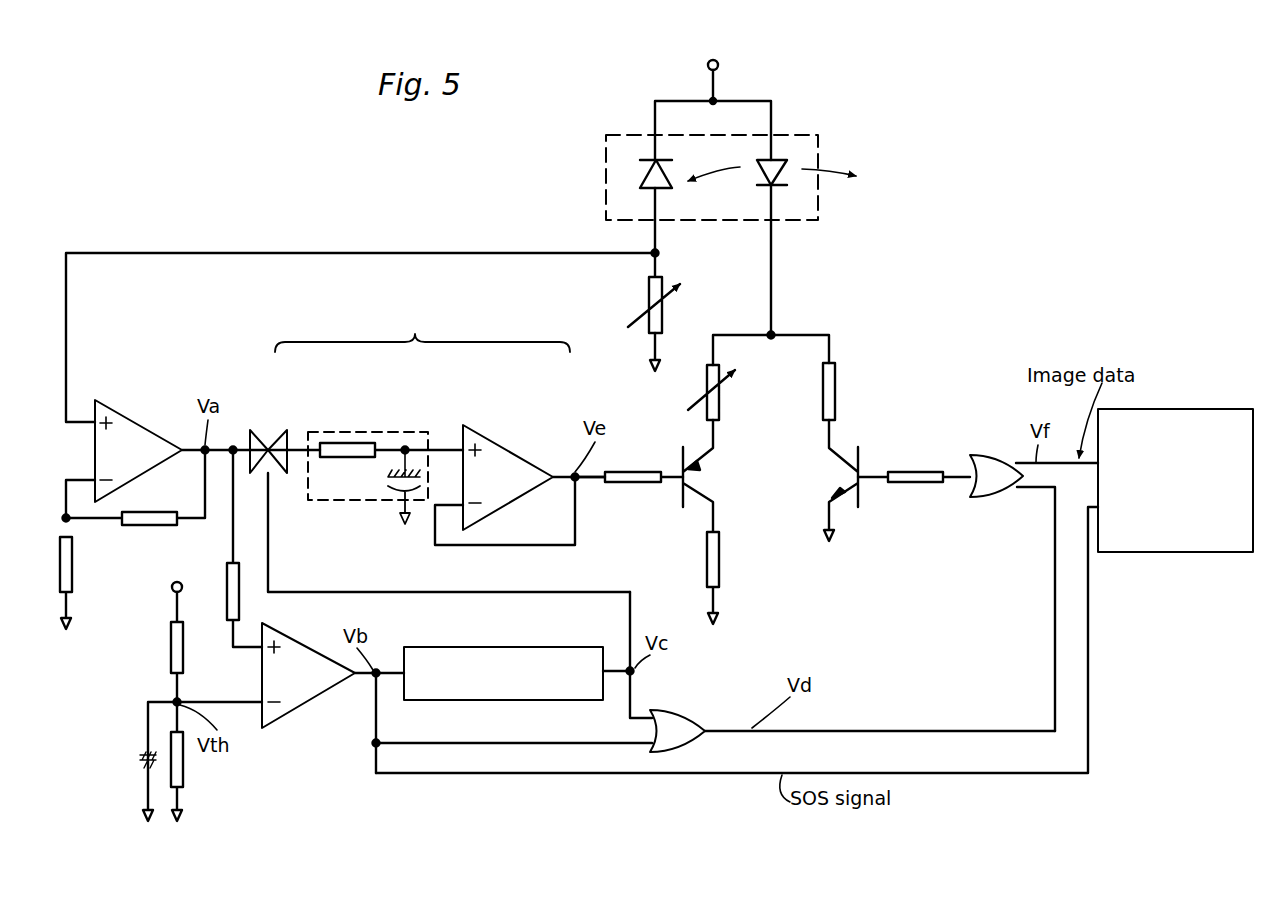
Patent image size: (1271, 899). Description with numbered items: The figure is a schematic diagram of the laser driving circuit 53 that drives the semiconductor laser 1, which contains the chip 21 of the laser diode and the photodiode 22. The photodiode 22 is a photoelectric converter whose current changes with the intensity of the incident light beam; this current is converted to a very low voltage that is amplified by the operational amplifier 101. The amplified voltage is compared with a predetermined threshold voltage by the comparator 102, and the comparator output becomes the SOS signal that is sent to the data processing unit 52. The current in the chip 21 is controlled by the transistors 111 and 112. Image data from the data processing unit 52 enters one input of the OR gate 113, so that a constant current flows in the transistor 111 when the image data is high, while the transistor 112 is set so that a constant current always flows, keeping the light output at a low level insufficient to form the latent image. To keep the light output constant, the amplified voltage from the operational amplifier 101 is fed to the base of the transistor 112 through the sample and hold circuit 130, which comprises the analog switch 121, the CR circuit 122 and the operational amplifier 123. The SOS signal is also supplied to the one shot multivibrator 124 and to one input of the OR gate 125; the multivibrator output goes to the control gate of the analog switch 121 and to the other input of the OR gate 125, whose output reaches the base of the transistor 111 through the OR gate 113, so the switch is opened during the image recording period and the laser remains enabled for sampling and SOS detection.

The semiconductor laser 1 is at (818, 160).
The chip of the laser diode 21 is at (775, 158).
The photodiode 22 is at (642, 176).
The data processing unit 52 is at (1165, 408).
The laser driving circuit 53 is at (500, 140).
The operational amplifier 101 is at (140, 422).
The comparator 102 is at (302, 707).
The transistor 111 is at (863, 465).
The transistor 112 is at (678, 463).
The OR gate 113 is at (997, 457).
The analog switch 121 is at (267, 428).
The CR circuit 122 is at (375, 423).
The operational amplifier 123 is at (513, 443).
The one shot multivibrator 124 is at (448, 647).
The OR gate 125 is at (672, 708).
The sample and hold circuit 130 is at (422, 328).